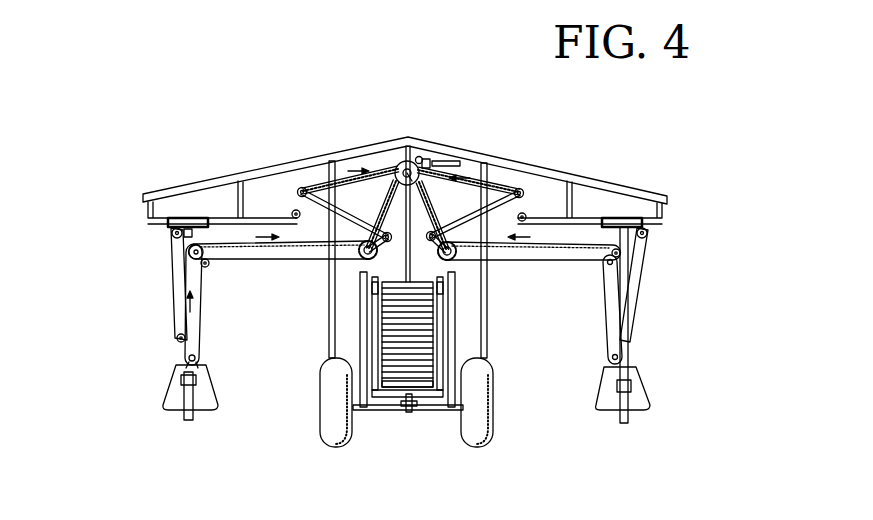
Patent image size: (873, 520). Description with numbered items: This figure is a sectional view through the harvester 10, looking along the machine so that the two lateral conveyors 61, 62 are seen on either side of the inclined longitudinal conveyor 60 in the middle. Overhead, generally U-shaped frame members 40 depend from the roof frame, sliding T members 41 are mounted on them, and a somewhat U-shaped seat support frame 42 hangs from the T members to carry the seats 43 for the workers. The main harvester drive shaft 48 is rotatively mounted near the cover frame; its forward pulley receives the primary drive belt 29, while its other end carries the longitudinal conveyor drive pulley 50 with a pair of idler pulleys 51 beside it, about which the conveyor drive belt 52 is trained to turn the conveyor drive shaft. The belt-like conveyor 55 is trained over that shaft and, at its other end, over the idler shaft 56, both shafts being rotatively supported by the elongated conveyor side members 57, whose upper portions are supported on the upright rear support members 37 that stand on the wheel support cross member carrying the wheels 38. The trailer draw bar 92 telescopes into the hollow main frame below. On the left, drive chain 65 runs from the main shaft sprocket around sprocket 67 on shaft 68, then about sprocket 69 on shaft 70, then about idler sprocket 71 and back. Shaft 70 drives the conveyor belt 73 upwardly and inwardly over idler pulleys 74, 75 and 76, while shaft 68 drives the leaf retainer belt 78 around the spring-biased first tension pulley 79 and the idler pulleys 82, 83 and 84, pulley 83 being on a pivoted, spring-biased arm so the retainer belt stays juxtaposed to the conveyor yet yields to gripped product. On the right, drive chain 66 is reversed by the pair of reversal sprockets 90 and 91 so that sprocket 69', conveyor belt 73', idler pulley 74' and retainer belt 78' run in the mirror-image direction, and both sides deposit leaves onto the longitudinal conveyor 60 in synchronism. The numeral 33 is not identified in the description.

The harvester 10 is at (703, 212).
The primary drive belt 29 is at (445, 292).
The wheel fork 33 is at (335, 348).
The upright rear support member 37 is at (359, 330).
The wheel 38 is at (337, 447).
The U-shaped frame member 40 is at (190, 220).
The sliding T member 41 is at (150, 205).
The seat support frame 42 is at (630, 323).
The seat 43 is at (178, 382).
The main harvester drive shaft 48 is at (407, 188).
The longitudinal conveyor drive pulley 50 is at (418, 192).
The idler pulley 51 is at (456, 161).
The conveyor drive belt 52 is at (430, 162).
The conveyor 55 is at (400, 378).
The idler shaft 56 is at (436, 385).
The conveyor side member 57 is at (408, 378).
The longitudinal conveyor 60 is at (367, 422).
The left lateral conveyor 61 is at (148, 257).
The right lateral conveyor 62 is at (678, 250).
The drive chain 65 is at (328, 195).
The drive chain 66 is at (508, 188).
The sprocket 67 is at (375, 195).
The shaft 68 is at (350, 215).
The sprocket 69 is at (283, 265).
The sprocket 69' is at (529, 262).
The shaft 70 is at (366, 262).
The idler sprocket 71 is at (302, 190).
The conveyor belt 73 is at (220, 351).
The conveyor belt 73' is at (586, 281).
The idler pulley 74 is at (215, 304).
The idler pulley 74' is at (591, 309).
The idler pulley 75 is at (200, 362).
The idler pulley 76 is at (207, 263).
The leaf retainer belt 78 is at (178, 220).
The leaf retainer belt 78' is at (637, 241).
The first tension pulley 79 is at (292, 214).
The idler pulley 82 is at (172, 234).
The idler pulley 83 is at (177, 337).
The idler pulley 84 is at (374, 253).
The reversal sprocket 90 is at (419, 157).
The reversal sprocket 91 is at (394, 185).
The trailer draw bar 92 is at (410, 413).